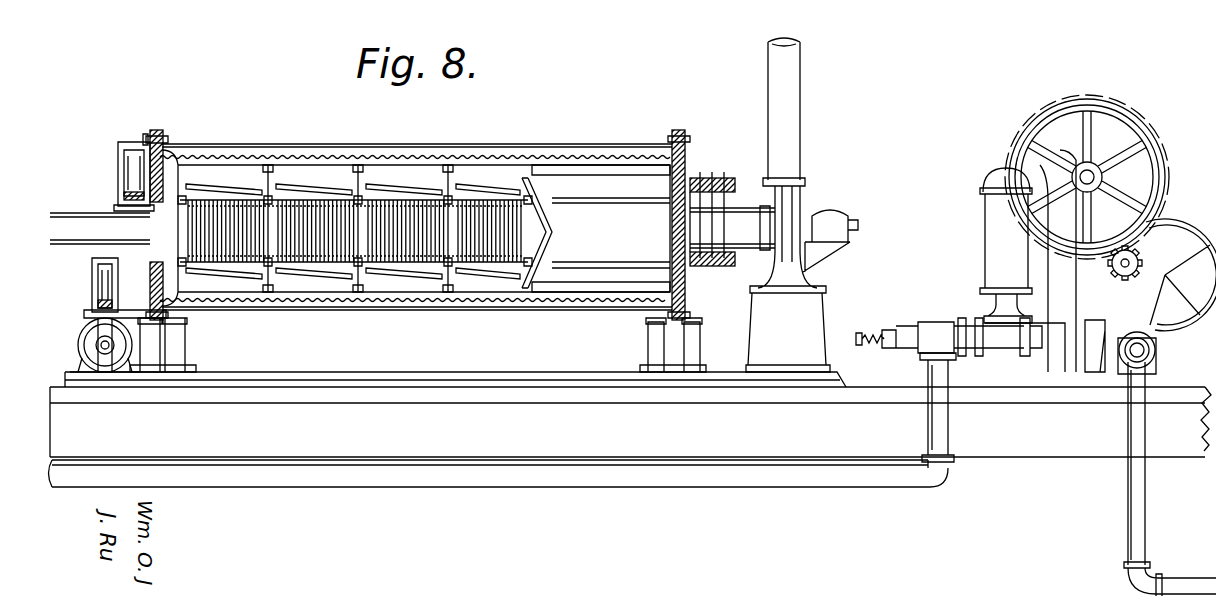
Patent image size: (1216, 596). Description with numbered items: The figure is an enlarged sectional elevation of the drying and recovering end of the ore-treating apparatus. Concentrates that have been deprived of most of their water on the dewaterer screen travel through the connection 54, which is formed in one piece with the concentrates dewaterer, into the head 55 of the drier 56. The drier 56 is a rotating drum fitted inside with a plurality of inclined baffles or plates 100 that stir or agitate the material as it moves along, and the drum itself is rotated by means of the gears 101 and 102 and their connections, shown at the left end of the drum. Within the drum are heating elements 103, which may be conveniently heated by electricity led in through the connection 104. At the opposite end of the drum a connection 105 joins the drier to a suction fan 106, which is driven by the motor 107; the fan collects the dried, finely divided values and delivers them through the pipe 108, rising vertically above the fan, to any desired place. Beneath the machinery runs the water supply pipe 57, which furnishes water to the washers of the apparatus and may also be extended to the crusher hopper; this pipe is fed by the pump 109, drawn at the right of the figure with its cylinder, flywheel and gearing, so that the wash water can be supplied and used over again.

The connection 54 is at (70, 214).
The head 55 is at (154, 135).
The drier 56 is at (448, 146).
The water supply pipe 57 is at (650, 488).
The inclined baffles 100 is at (300, 190).
The gear 101 is at (103, 292).
The gear 102 is at (128, 178).
The heating elements 103 is at (422, 240).
The connection 104 is at (708, 188).
The connection 105 is at (745, 208).
The suction fan 106 is at (796, 212).
The motor 107 is at (840, 220).
The pipe 108 is at (792, 130).
The pump 109 is at (995, 274).